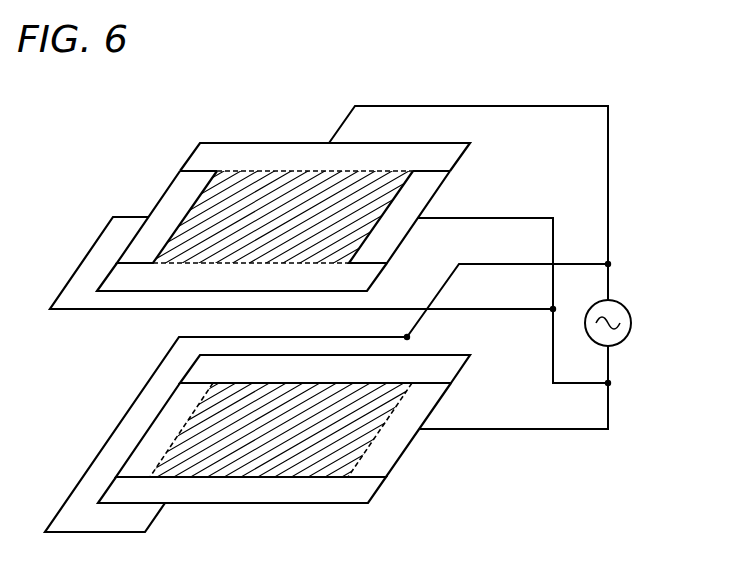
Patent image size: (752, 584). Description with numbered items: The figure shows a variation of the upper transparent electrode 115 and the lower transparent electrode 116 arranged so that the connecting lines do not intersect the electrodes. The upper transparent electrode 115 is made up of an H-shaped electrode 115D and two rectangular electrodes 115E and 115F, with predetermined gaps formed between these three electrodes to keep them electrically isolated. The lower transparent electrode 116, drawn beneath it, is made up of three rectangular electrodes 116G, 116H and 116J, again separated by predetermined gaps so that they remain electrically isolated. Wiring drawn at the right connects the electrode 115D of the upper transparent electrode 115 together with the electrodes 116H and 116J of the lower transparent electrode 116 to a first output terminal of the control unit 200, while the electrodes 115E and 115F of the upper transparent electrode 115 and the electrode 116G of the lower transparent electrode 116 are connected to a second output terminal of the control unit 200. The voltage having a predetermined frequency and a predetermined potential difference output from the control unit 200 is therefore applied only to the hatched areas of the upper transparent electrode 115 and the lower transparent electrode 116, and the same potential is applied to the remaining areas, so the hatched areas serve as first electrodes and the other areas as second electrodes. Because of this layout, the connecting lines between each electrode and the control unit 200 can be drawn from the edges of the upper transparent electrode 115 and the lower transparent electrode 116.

The upper transparent electrode 115 is at (160, 180).
The H-shaped electrode 115D is at (237, 152).
The rectangular electrode 115E is at (160, 207).
The rectangular electrode 115F is at (422, 190).
The lower transparent electrode 116 is at (415, 450).
The rectangular electrode 116H is at (430, 358).
The rectangular electrode 116G is at (380, 457).
The rectangular electrode 116J is at (258, 496).
The control unit 200 is at (627, 299).